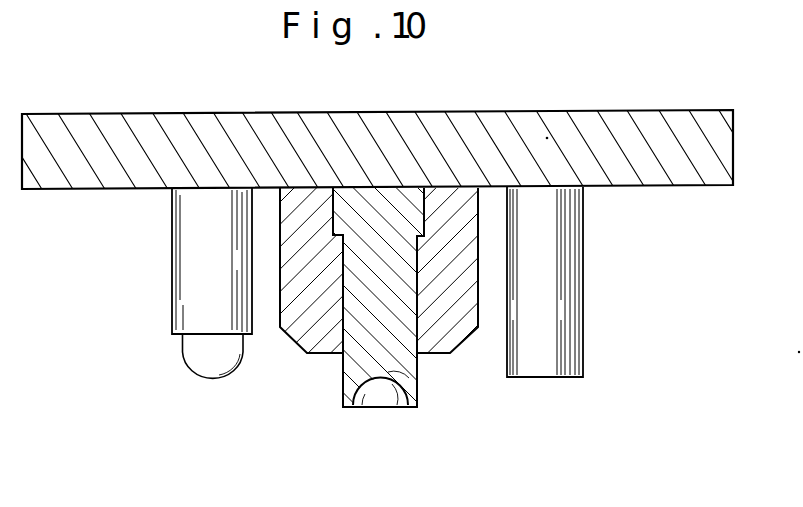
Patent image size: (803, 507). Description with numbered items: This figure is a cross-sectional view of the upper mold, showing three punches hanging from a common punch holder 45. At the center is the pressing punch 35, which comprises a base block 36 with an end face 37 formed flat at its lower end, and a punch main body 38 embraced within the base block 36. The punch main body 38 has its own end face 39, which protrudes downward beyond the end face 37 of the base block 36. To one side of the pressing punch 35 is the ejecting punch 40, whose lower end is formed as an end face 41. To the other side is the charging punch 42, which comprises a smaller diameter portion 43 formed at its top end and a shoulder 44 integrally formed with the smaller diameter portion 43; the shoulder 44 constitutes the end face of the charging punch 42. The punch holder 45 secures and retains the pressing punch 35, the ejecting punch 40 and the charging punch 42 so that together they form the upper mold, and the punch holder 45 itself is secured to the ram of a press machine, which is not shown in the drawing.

The pressing punch 35 is at (378, 322).
The base block 36 is at (290, 332).
The end face 37 is at (322, 353).
The punch main body 38 is at (419, 381).
The end face 39 is at (398, 392).
The ejecting punch 40 is at (572, 275).
The end face 41 is at (558, 378).
The charging punch 42 is at (188, 288).
The smaller diameter portion 43 is at (198, 377).
The shoulder 44 is at (178, 334).
The punch holder 45 is at (662, 125).